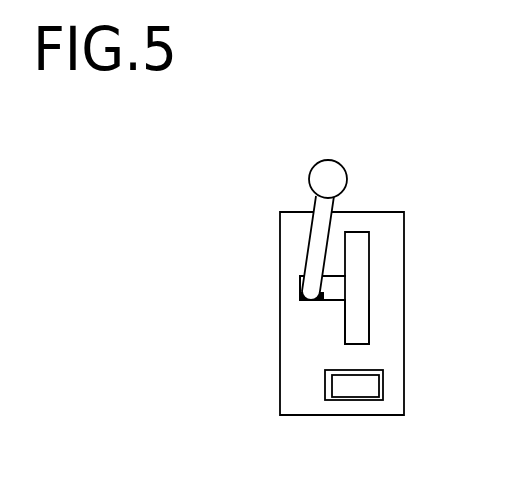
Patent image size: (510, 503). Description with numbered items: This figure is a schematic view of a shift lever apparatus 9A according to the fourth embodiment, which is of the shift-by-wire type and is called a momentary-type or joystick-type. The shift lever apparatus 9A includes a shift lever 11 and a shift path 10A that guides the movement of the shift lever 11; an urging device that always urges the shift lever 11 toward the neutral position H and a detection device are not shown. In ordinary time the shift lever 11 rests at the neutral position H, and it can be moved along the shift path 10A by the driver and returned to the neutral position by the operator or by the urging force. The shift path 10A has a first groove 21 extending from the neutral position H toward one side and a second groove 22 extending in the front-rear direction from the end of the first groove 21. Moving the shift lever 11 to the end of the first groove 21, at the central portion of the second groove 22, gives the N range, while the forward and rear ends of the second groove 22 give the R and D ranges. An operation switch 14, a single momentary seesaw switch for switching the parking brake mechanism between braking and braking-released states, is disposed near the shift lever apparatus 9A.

The shift lever apparatus 9A is at (405, 249).
The second groove 22 is at (363, 245).
The shift path 10A is at (363, 335).
The first groove 21 is at (333, 298).
The shift lever 11 is at (320, 182).
The operation switch 14 is at (365, 387).